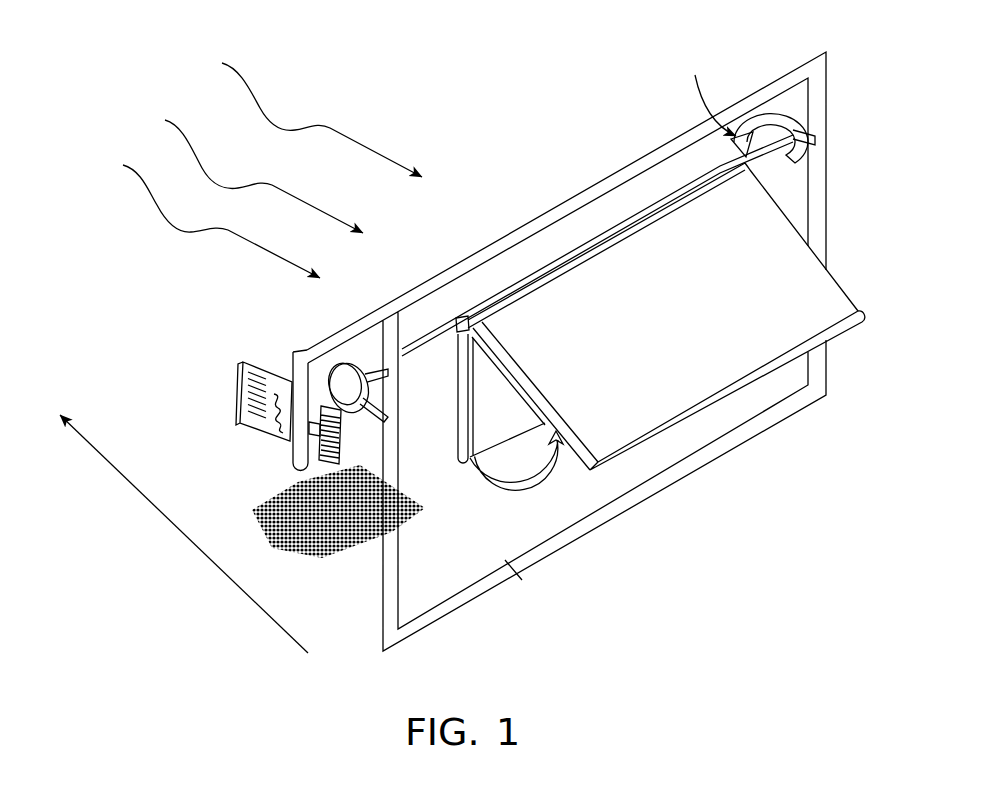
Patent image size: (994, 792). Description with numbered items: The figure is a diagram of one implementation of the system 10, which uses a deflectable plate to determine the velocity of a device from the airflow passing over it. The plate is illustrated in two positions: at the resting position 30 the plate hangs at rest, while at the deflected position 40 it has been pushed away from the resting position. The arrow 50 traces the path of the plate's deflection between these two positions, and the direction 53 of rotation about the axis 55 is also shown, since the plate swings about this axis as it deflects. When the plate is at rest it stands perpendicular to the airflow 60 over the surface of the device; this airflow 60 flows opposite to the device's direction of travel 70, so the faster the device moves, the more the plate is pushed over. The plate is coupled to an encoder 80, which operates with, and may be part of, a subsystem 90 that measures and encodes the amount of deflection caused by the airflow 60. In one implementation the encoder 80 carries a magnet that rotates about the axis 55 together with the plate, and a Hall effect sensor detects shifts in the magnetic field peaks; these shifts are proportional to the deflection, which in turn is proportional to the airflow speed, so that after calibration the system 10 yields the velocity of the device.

The system 10 is at (538, 348).
The resting position 30 is at (503, 452).
The deflected position 40 is at (850, 247).
The arrow 50 is at (570, 476).
The direction of rotation 53 is at (790, 112).
The axis 55 is at (432, 332).
The airflow 60 is at (117, 202).
The movement direction 70 is at (98, 483).
The encoder 80 is at (330, 368).
The subsystem 90 is at (222, 352).